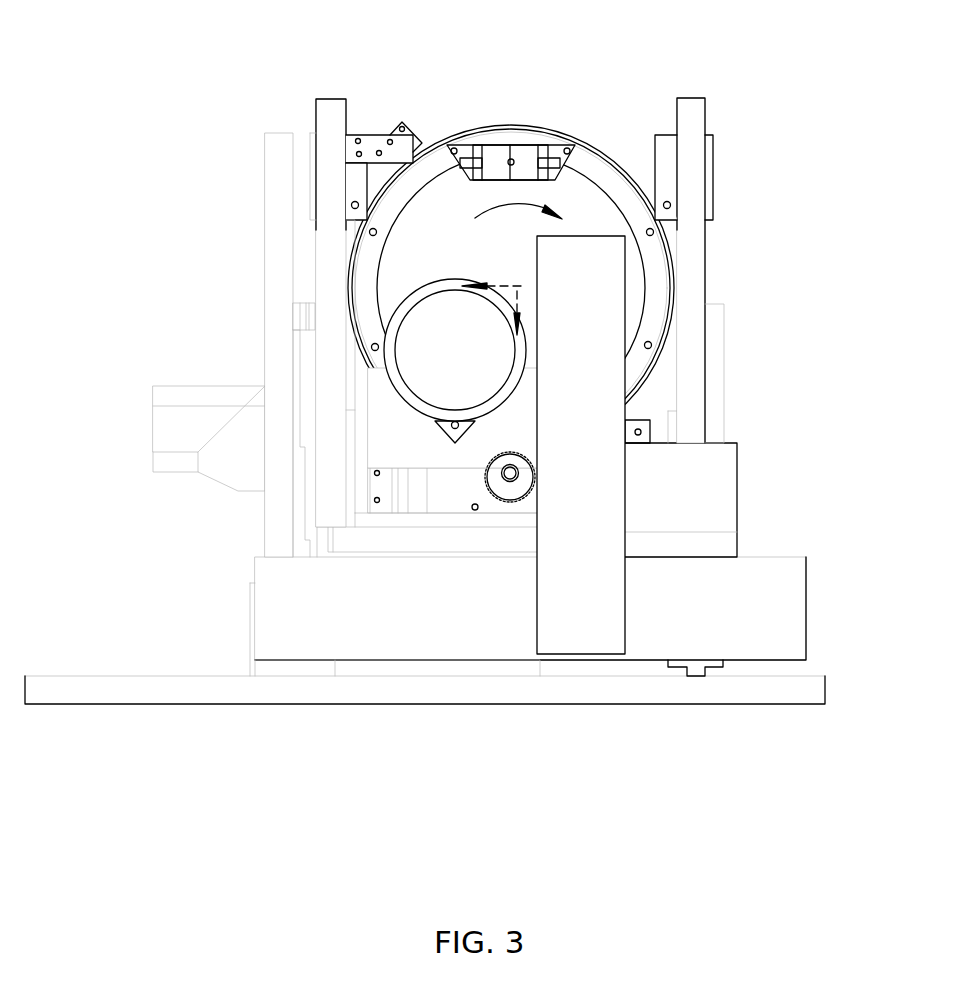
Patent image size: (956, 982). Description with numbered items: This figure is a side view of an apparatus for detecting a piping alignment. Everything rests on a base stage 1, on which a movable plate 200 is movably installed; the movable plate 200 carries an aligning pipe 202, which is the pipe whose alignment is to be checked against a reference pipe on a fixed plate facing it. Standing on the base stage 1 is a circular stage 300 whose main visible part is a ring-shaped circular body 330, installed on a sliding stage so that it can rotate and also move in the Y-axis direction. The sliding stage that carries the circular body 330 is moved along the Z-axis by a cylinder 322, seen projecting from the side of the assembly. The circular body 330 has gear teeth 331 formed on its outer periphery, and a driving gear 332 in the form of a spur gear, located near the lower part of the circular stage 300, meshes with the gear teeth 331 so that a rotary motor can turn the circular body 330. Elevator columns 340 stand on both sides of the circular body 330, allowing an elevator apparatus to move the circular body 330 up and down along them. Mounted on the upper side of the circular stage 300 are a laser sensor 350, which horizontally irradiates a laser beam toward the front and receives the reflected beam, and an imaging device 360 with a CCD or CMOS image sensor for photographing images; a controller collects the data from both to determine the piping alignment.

The base stage 1 is at (460, 693).
The movable plate 200 is at (768, 526).
The aligning pipe 202 is at (393, 316).
The circular stage 300 is at (592, 239).
The cylinder 322 is at (172, 422).
The circular body 330 is at (657, 258).
The gear teeth 331 is at (601, 143).
The driving gear 332 is at (512, 488).
The elevator column 340 is at (328, 123).
The laser sensor 350 is at (492, 160).
The imaging device 360 is at (460, 112).